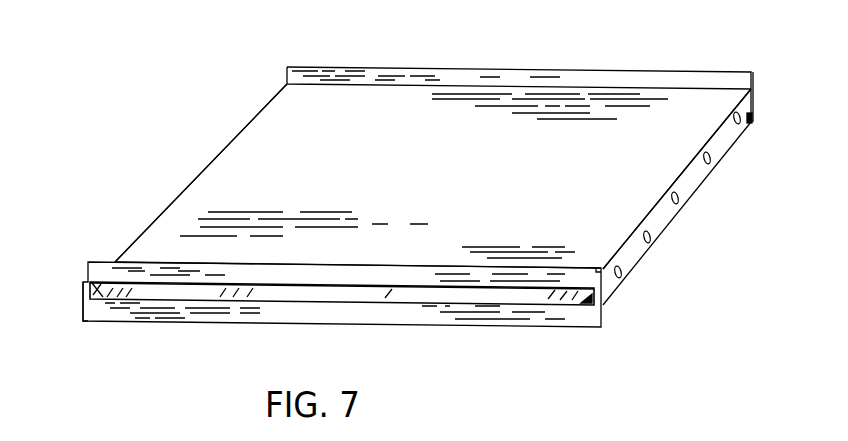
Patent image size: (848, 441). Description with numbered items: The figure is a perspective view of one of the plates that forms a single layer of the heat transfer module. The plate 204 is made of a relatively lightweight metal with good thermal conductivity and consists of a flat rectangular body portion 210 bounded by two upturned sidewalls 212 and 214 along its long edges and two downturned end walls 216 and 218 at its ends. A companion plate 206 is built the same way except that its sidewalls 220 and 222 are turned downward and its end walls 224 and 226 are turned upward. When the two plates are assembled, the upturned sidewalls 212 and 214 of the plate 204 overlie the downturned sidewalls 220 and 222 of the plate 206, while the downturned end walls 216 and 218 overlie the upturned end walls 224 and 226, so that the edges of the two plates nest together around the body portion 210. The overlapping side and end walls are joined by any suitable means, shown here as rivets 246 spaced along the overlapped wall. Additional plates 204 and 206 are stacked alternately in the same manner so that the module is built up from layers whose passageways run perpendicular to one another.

The plate 204 is at (242, 129).
The plate 206 is at (240, 324).
The flat rectangular body portion 210 is at (461, 160).
The upturned sidewall 212 is at (491, 76).
The upturned sidewall 214 is at (398, 272).
The downturned end wall 216 is at (712, 143).
The downturned end wall 218 is at (97, 297).
The downturned sidewall 220 is at (363, 311).
The downturned sidewall 222 is at (757, 123).
The upturned end wall 224 is at (583, 299).
The upturned end wall 226 is at (84, 291).
The rivets 246 is at (652, 236).